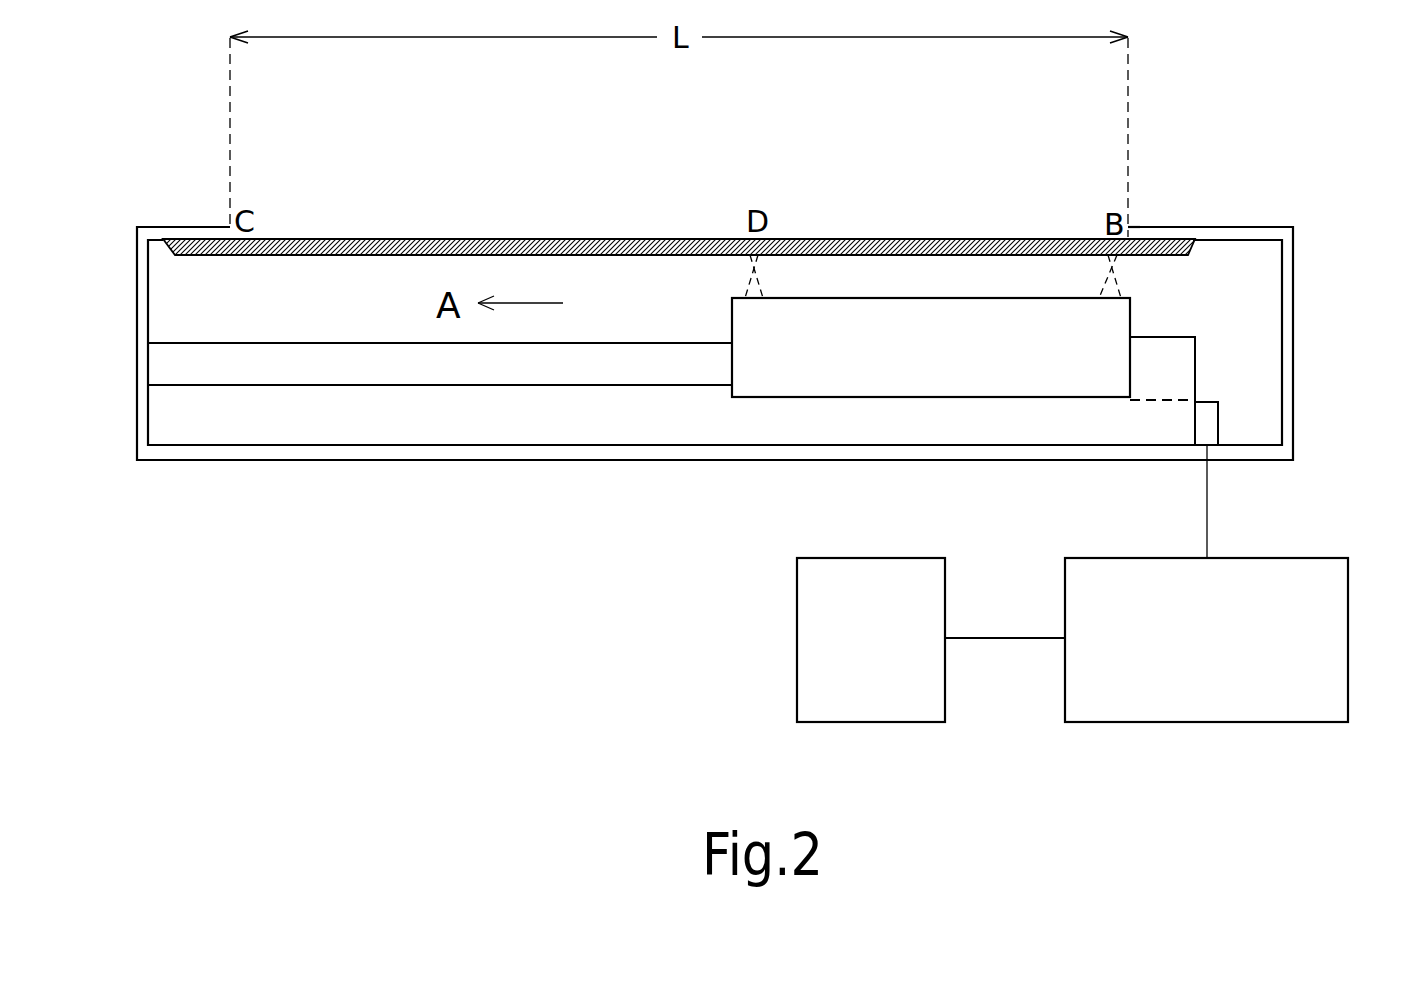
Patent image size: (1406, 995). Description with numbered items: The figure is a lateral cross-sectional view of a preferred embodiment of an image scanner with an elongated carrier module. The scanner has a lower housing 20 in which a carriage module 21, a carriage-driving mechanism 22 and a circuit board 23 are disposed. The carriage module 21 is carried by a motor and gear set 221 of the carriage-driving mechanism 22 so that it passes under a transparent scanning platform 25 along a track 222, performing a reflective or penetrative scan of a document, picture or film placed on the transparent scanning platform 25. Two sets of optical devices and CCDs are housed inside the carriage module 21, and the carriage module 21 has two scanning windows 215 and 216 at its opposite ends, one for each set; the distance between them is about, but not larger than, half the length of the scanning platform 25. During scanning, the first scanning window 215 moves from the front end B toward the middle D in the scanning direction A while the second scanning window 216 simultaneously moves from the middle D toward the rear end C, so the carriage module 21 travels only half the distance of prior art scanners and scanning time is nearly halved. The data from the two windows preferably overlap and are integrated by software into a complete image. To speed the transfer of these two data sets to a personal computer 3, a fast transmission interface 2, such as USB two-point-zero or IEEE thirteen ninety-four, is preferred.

The transmission interface 2 is at (1325, 692).
The personal computer 3 is at (922, 692).
The lower housing 20 is at (1233, 383).
The carriage module 21 is at (950, 320).
The carriage-driving mechanism 22 is at (1190, 310).
The circuit board 23 is at (1208, 433).
The transparent scanning platform 25 is at (790, 238).
The first scanning window 215 is at (1133, 228).
The second scanning window 216 is at (740, 242).
The motor and gear set 221 is at (1175, 367).
The track 222 is at (415, 363).